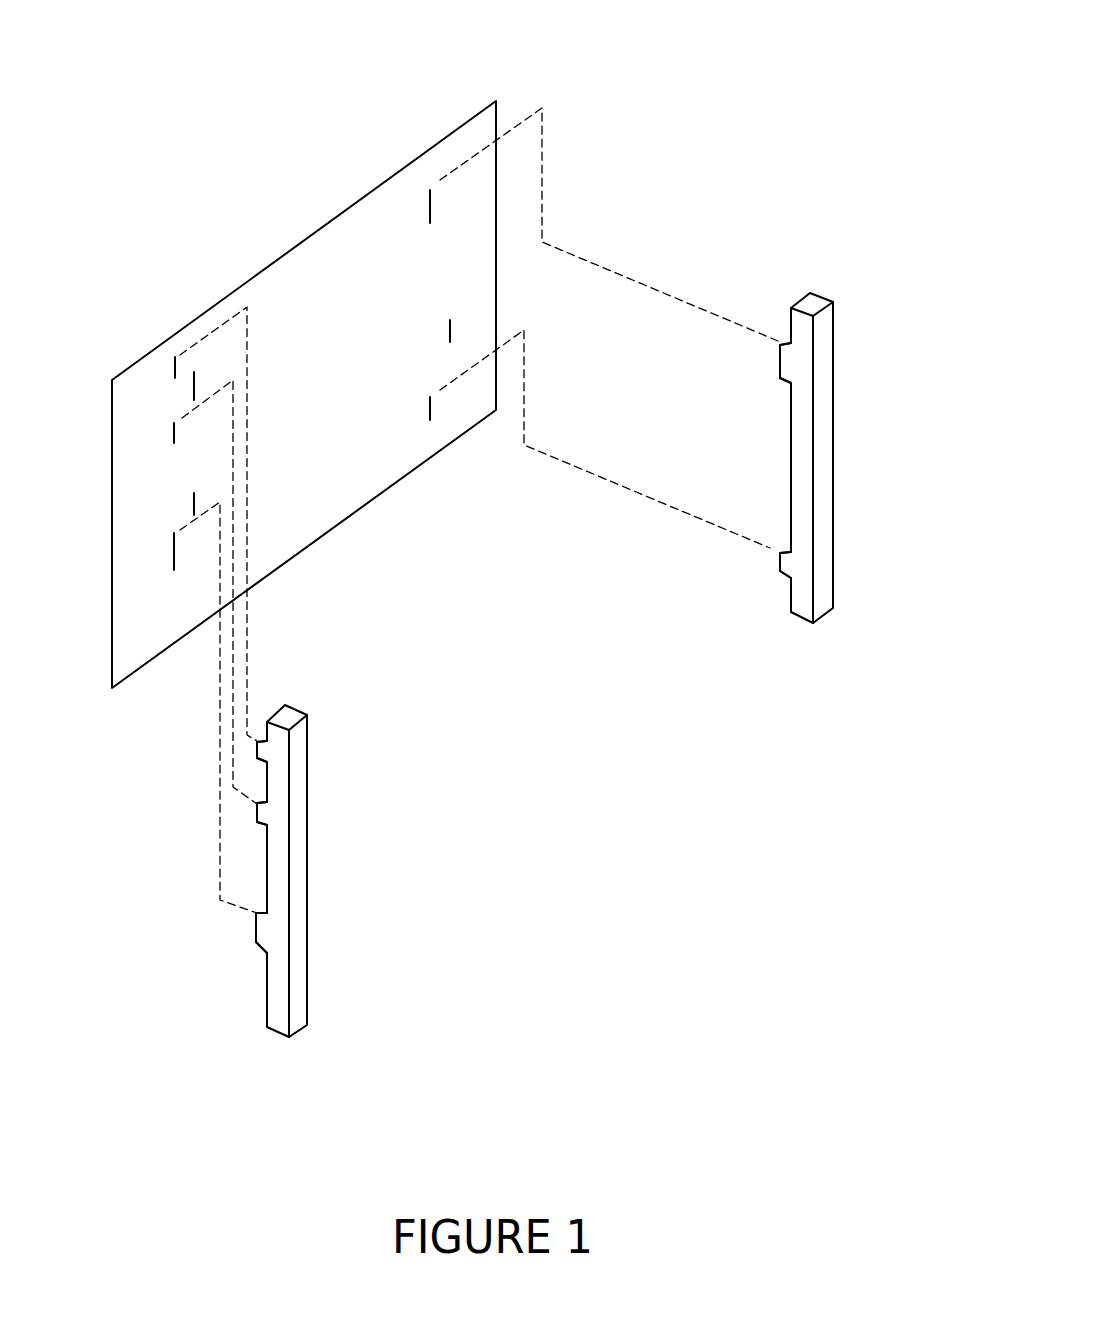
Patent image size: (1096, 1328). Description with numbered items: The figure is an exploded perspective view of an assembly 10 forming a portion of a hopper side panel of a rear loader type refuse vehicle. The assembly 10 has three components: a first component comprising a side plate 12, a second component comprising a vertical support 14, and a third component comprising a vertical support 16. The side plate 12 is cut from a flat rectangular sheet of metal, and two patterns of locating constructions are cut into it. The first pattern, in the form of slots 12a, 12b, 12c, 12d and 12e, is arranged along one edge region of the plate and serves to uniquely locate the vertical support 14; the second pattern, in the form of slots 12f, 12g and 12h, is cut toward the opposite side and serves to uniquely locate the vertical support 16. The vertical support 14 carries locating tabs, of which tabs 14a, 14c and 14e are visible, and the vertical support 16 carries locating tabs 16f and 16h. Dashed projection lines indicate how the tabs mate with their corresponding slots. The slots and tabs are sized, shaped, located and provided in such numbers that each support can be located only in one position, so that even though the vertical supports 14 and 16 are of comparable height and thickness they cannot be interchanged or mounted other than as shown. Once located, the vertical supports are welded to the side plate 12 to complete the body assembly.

The assembly 10 is at (657, 85).
The side plate 12 is at (313, 232).
The slot 12a is at (170, 372).
The slot 12b is at (208, 377).
The slot 12c is at (170, 437).
The slot 12d is at (190, 510).
The slot 12e is at (170, 553).
The slot 12f is at (427, 211).
The slot 12g is at (445, 333).
The slot 12h is at (425, 412).
The vertical support 14 is at (312, 832).
The tab 14a is at (255, 759).
The tab 14c is at (253, 825).
The tab 14e is at (255, 940).
The vertical support 16 is at (835, 425).
The tab 16f is at (778, 363).
The tab 16h is at (778, 562).